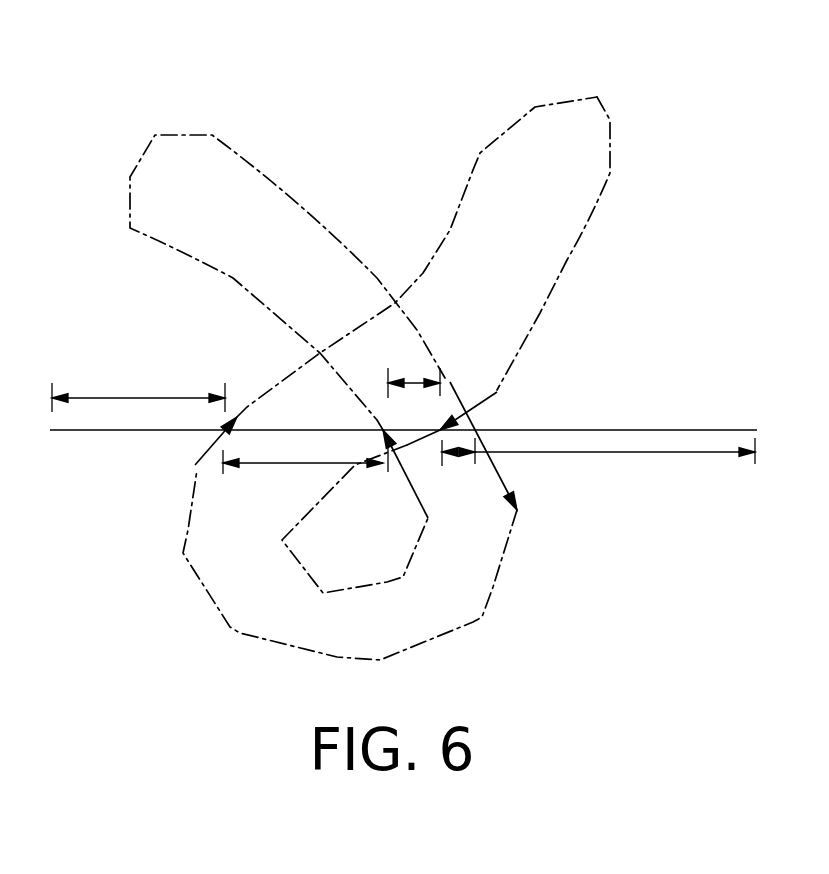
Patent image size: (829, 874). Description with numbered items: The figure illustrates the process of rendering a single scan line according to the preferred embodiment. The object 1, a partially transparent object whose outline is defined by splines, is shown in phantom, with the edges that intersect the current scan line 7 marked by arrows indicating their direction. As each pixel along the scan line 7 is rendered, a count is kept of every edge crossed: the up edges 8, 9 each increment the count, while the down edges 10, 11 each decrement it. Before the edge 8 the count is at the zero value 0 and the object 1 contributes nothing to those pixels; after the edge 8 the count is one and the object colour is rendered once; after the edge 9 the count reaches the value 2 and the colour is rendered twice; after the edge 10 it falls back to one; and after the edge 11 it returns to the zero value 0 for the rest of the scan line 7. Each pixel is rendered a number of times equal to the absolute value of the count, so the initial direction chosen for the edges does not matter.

The object 1 is at (648, 45).
The scan line 7 is at (713, 430).
The up edge 8 is at (196, 464).
The up edge 9 is at (420, 503).
The down edge 10 is at (500, 397).
The down edge 11 is at (455, 379).
The zero-width dimension 0 is at (403, 424).
The width dimension 2 is at (414, 370).